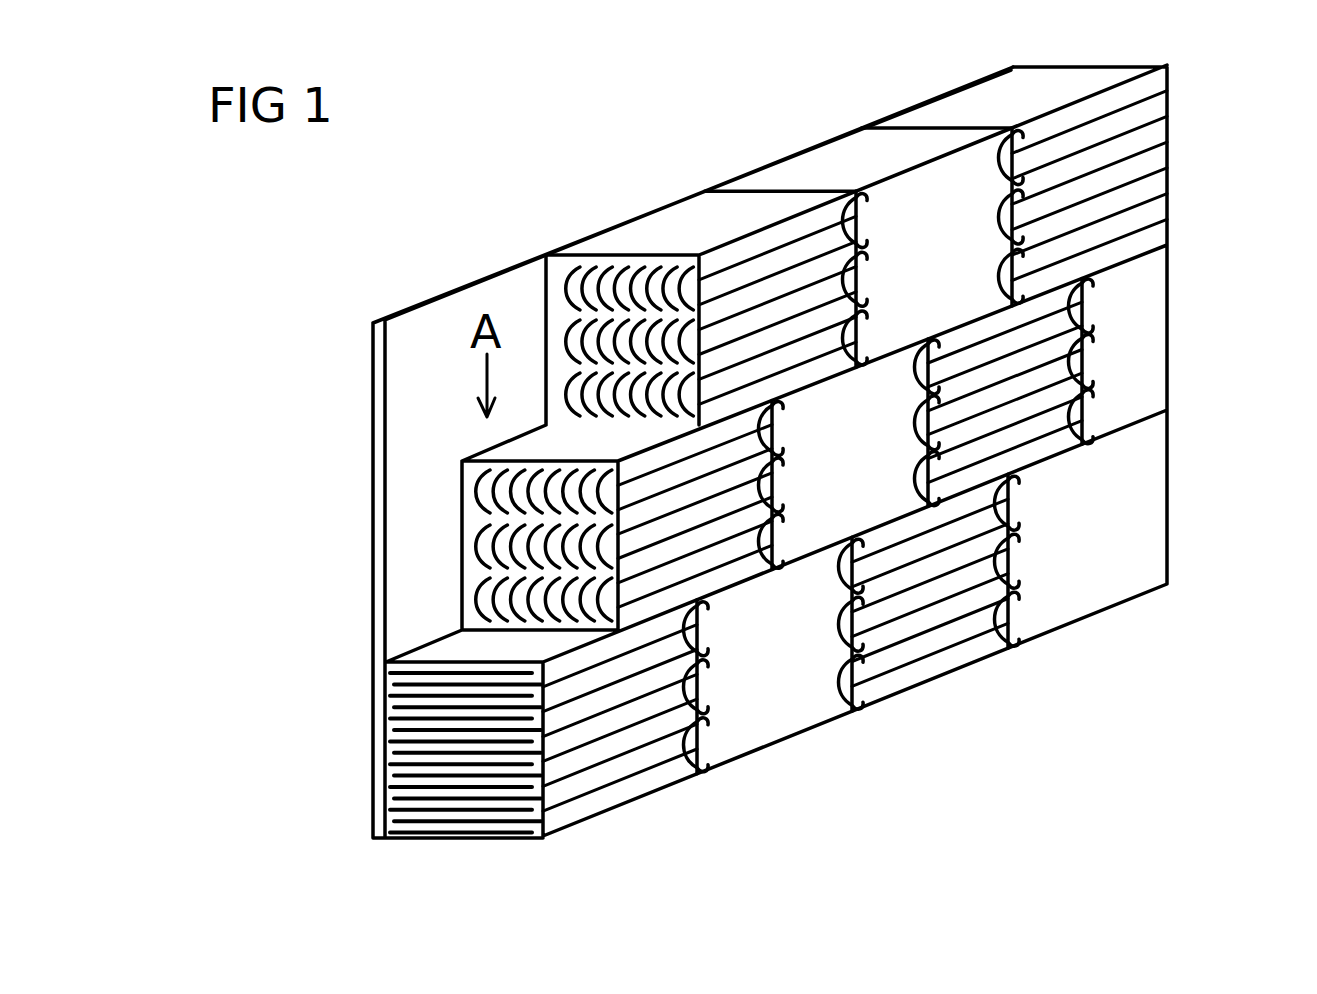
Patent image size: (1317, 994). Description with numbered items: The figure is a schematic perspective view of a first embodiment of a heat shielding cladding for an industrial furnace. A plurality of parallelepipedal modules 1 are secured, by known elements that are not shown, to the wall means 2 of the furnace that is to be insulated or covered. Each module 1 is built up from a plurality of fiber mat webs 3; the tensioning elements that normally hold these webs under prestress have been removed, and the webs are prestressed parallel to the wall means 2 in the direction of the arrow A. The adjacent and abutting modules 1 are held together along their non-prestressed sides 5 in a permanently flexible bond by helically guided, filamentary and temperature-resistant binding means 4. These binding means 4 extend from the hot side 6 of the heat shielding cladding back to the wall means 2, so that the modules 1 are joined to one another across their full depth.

The parallelepipedal modules 1 is at (1027, 87).
The wall means 2 is at (382, 397).
The fiber mat webs 3 is at (395, 787).
The binding means 4 is at (573, 280).
The non-prestressed sides 5 is at (757, 190).
The hot side 6 is at (758, 703).